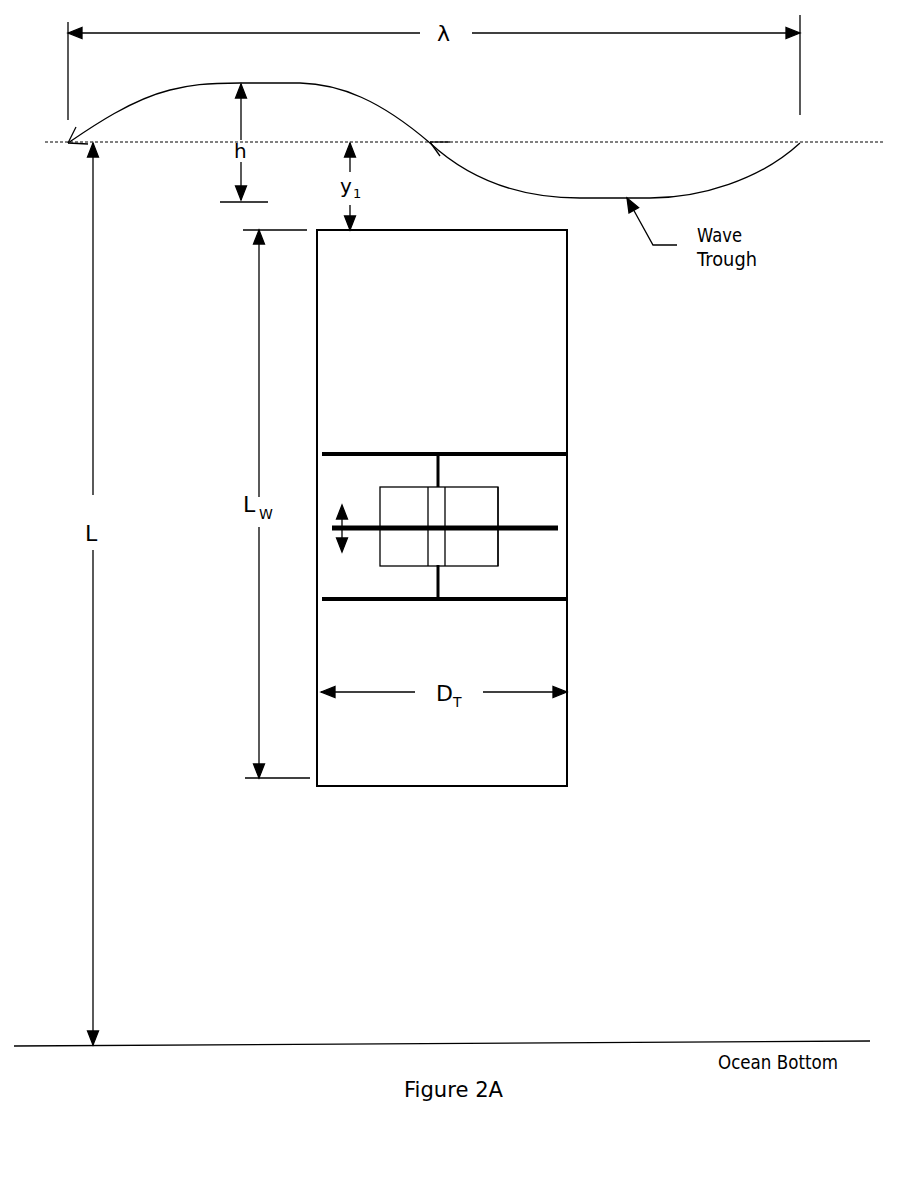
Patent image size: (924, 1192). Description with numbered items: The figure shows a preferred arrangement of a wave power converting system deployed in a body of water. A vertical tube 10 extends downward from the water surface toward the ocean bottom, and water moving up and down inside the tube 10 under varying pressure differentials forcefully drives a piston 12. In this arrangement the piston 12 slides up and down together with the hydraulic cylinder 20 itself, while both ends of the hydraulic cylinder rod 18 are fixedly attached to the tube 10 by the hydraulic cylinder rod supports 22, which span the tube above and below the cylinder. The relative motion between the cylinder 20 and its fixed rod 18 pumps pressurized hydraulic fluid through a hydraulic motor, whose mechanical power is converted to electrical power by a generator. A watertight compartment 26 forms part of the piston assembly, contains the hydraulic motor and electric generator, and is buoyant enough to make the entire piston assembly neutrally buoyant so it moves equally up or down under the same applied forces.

The tube 10 is at (568, 726).
The piston 12 is at (550, 516).
The hydraulic cylinder rod 18 is at (440, 463).
The hydraulic cylinder 20 is at (430, 517).
The hydraulic cylinder rod support 22 is at (362, 598).
The watertight compartment 26 is at (478, 498).